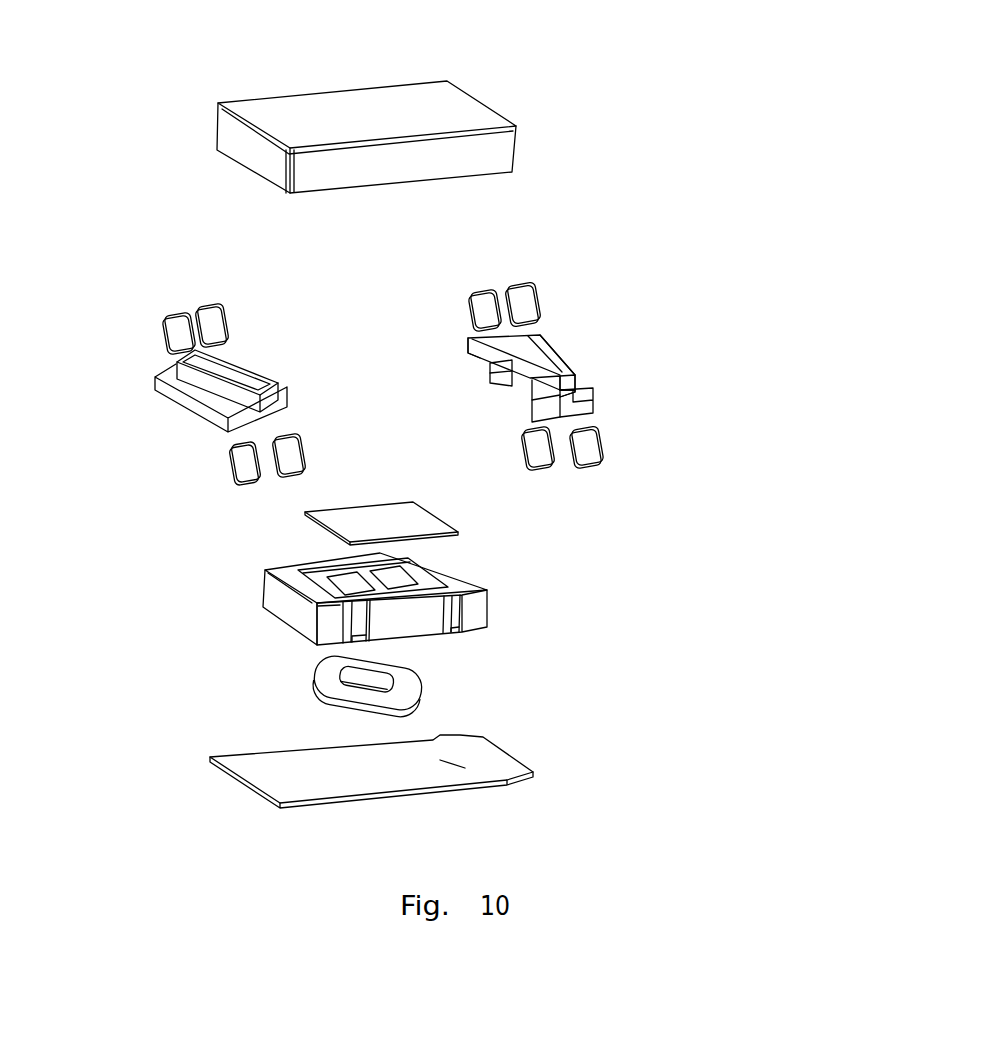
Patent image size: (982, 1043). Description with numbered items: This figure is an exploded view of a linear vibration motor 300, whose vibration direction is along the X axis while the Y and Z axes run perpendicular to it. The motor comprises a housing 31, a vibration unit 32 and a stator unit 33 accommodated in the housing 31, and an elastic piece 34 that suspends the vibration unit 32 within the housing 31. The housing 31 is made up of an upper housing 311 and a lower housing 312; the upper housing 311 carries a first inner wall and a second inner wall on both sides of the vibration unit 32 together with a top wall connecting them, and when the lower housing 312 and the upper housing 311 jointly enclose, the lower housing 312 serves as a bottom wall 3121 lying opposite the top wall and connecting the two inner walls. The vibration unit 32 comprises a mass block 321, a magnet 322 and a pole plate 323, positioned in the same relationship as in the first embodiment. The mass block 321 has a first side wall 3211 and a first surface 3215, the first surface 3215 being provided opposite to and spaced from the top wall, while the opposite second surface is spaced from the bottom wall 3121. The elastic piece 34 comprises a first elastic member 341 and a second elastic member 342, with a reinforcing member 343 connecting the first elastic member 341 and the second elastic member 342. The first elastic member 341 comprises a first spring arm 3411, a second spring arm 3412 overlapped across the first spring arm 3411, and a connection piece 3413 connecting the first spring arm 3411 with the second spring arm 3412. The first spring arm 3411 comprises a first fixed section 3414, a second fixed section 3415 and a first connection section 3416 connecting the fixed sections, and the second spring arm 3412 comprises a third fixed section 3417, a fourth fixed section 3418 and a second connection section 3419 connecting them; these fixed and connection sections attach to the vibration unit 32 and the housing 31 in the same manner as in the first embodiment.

The linear vibration motor 300 is at (432, 33).
The housing 31 is at (113, 660).
The upper housing 311 is at (208, 127).
The lower housing 312 is at (232, 750).
The bottom wall 3121 is at (452, 765).
The vibration unit 32 is at (708, 540).
The mass block 321 is at (497, 626).
The first side wall 3211 is at (332, 623).
The first surface 3215 is at (290, 577).
The magnet 322 is at (400, 582).
The pole plate 323 is at (430, 525).
The stator unit 33 is at (400, 687).
The elastic piece 34 is at (755, 248).
The first elastic member 341 is at (697, 317).
The first spring arm 3411 is at (582, 358).
The second spring arm 3412 is at (592, 389).
The connection piece 3413 is at (545, 338).
The first fixed section 3414 is at (527, 378).
The second fixed section 3415 is at (469, 354).
The first connection section 3416 is at (503, 373).
The third fixed section 3417 is at (497, 378).
The fourth fixed section 3418 is at (543, 407).
The second connection section 3419 is at (577, 400).
The second elastic member 342 is at (283, 357).
The reinforcing member 343 is at (595, 445).